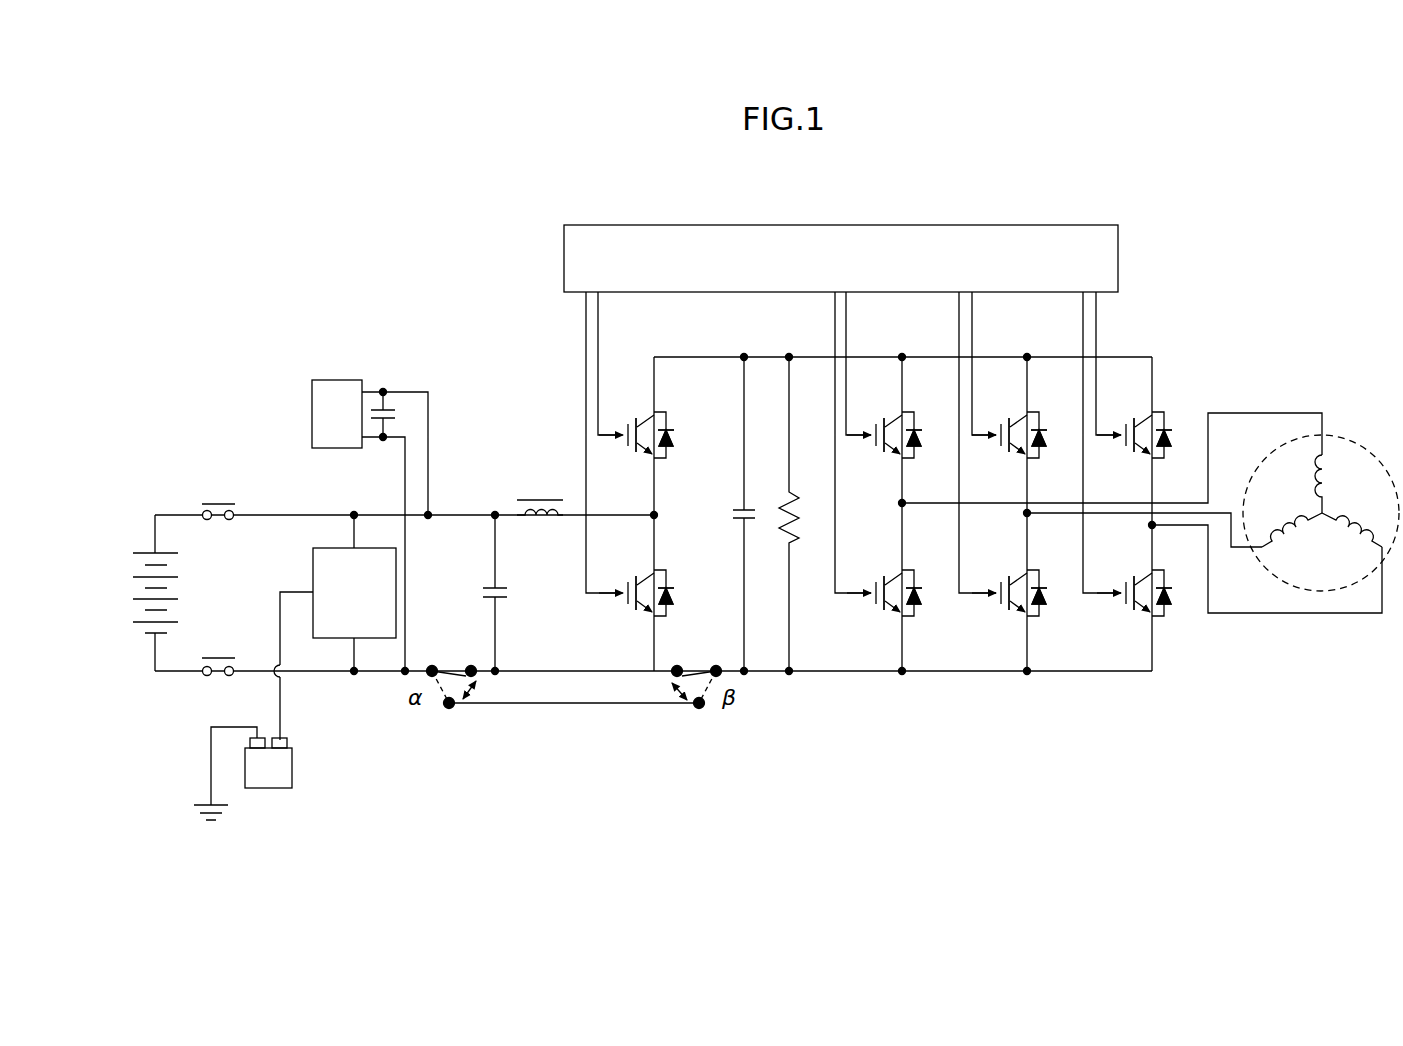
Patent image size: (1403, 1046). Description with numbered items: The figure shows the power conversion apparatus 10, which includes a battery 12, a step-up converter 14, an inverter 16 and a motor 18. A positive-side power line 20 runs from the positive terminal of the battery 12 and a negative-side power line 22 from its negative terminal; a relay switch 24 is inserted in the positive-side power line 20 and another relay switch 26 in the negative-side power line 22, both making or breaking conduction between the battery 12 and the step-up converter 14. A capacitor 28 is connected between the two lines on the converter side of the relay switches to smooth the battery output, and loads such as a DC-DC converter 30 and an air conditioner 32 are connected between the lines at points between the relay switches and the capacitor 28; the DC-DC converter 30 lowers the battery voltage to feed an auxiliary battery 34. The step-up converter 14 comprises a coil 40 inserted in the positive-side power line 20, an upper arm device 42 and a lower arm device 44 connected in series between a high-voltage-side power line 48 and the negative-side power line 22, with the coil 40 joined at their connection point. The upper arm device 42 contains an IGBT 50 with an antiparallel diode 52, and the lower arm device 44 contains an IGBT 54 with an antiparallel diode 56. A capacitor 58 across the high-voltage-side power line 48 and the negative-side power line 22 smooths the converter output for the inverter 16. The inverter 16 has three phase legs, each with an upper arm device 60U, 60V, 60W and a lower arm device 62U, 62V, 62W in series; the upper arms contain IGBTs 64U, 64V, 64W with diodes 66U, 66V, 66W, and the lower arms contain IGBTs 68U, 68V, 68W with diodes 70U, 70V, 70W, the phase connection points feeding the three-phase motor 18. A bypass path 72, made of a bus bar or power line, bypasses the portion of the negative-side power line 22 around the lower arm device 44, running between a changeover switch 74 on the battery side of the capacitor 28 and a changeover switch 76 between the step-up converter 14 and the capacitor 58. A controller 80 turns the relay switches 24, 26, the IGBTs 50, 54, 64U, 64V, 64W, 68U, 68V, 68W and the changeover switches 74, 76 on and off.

The power conversion apparatus 10 is at (1178, 336).
The battery 12 is at (148, 551).
The step-up converter 14 is at (524, 375).
The inverter 16 is at (997, 680).
The motor 18 is at (1345, 432).
The positive-side power line 20 is at (280, 515).
The negative-side power line 22 is at (305, 671).
The relay switch 24 is at (218, 504).
The relay switch 26 is at (218, 660).
The capacitor 28 is at (495, 587).
The DC-DC converter 30 is at (313, 574).
The air conditioner 32 is at (337, 380).
The auxiliary battery 34 is at (292, 764).
The coil 40 is at (537, 521).
The upper arm device 42 is at (630, 417).
The lower arm device 44 is at (630, 575).
The high-voltage-side power line 48 is at (700, 357).
The IGBT 50 is at (634, 450).
The diode 52 is at (667, 429).
The IGBT 54 is at (634, 608).
The diode 56 is at (668, 606).
The capacitor 58 is at (742, 509).
The upper arm device 60U is at (878, 417).
The upper arm device 60V is at (1003, 417).
The upper arm device 60W is at (1128, 417).
The lower arm device 62U is at (878, 575).
The lower arm device 62V is at (1003, 575).
The lower arm device 62W is at (1128, 575).
The IGBT 64U is at (883, 450).
The IGBT 64V is at (1008, 450).
The IGBT 64W is at (1133, 450).
The diode 66U is at (915, 429).
The diode 66V is at (1040, 429).
The diode 66W is at (1165, 429).
The IGBT 68U is at (883, 608).
The IGBT 68V is at (1008, 608).
The IGBT 68W is at (1133, 608).
The diode 70U is at (916, 606).
The diode 70V is at (1041, 606).
The diode 70W is at (1166, 606).
The bypass path 72 is at (575, 705).
The changeover switch 74 is at (462, 668).
The changeover switch 76 is at (690, 668).
The controller 80 is at (845, 225).